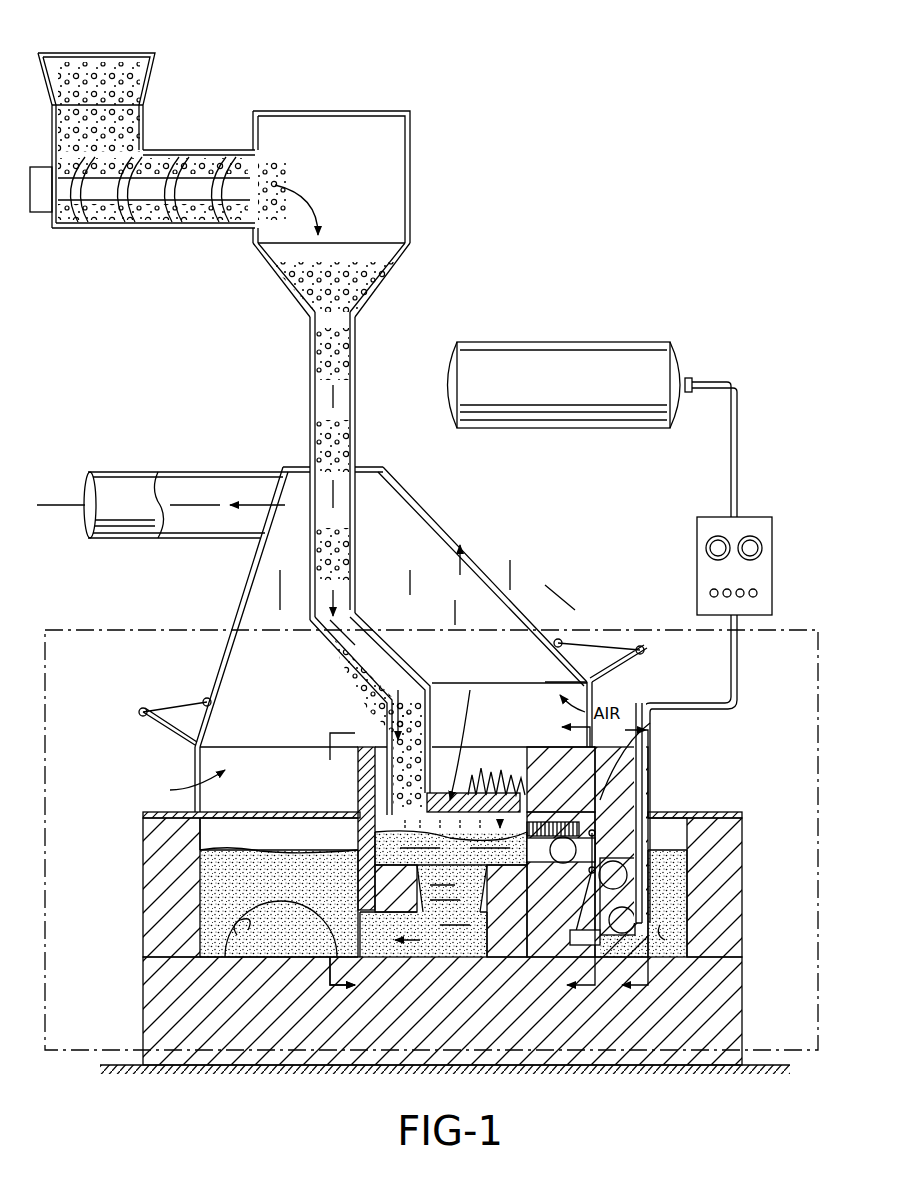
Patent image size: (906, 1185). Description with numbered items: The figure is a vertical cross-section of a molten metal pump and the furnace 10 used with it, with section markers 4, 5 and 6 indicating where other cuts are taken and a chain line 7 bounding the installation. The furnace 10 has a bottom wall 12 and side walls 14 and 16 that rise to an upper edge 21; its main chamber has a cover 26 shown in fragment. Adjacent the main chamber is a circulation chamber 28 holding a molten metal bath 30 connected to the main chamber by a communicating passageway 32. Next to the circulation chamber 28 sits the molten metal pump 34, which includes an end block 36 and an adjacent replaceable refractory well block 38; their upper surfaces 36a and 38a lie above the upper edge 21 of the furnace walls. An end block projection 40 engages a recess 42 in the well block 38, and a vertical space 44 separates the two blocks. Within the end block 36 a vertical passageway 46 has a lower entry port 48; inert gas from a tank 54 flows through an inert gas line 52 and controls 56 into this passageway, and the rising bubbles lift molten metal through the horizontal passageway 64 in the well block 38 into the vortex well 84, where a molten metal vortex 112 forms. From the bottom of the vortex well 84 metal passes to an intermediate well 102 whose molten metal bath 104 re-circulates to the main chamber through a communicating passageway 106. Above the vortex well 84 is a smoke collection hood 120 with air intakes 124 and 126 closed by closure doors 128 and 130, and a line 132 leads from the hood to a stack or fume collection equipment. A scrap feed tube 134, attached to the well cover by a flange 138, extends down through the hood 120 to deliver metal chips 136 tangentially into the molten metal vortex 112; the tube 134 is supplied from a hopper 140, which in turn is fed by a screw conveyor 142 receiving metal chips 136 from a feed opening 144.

The melting system boundary 7 is at (175, 630).
The feed opening 144 is at (125, 55).
The screw conveyor 142 is at (160, 228).
The hopper 140 is at (410, 195).
The scrap feed tube 134 is at (355, 552).
The metal chips 136 is at (352, 670).
The smoke collection hood 120 is at (425, 510).
The line 132 is at (130, 538).
The closure door 128 is at (155, 722).
The air intake 126 is at (650, 690).
The closure door 130 is at (600, 640).
The tank 54 is at (562, 342).
The inert gas line 52 is at (737, 462).
The controls 56 is at (750, 525).
The bottom wall 12 is at (735, 1025).
The side wall 14 is at (143, 905).
The side wall 16 is at (742, 880).
The upper edge 21 is at (165, 812).
The furnace 10 is at (143, 845).
The molten metal bath 104 is at (230, 885).
The communicating passageway 106 is at (235, 940).
The cover 26 is at (265, 835).
The intermediate well 102 is at (298, 850).
The air intake 124 is at (200, 765).
The vortex well 84 is at (388, 830).
The molten metal vortex 112 is at (405, 870).
The well block 38 is at (533, 760).
The flange 138 is at (462, 724).
The upper surface 38a is at (570, 768).
The vertical space 44 is at (595, 808).
The horizontal passageway 64 is at (545, 862).
The vertical passageway 46 is at (630, 845).
The end block projection 40 is at (625, 935).
The recess 42 is at (580, 930).
The entry port 48 is at (640, 945).
The end block 36 is at (655, 752).
The upper surface 36a is at (635, 730).
The molten metal pump 34 is at (660, 785).
The circulation chamber 28 is at (668, 825).
The molten metal bath 30 is at (680, 915).
The communicating passageway 32 is at (665, 940).
The section line 4 is at (352, 860).
The section line 5 is at (566, 856).
The section line 6 is at (644, 858).